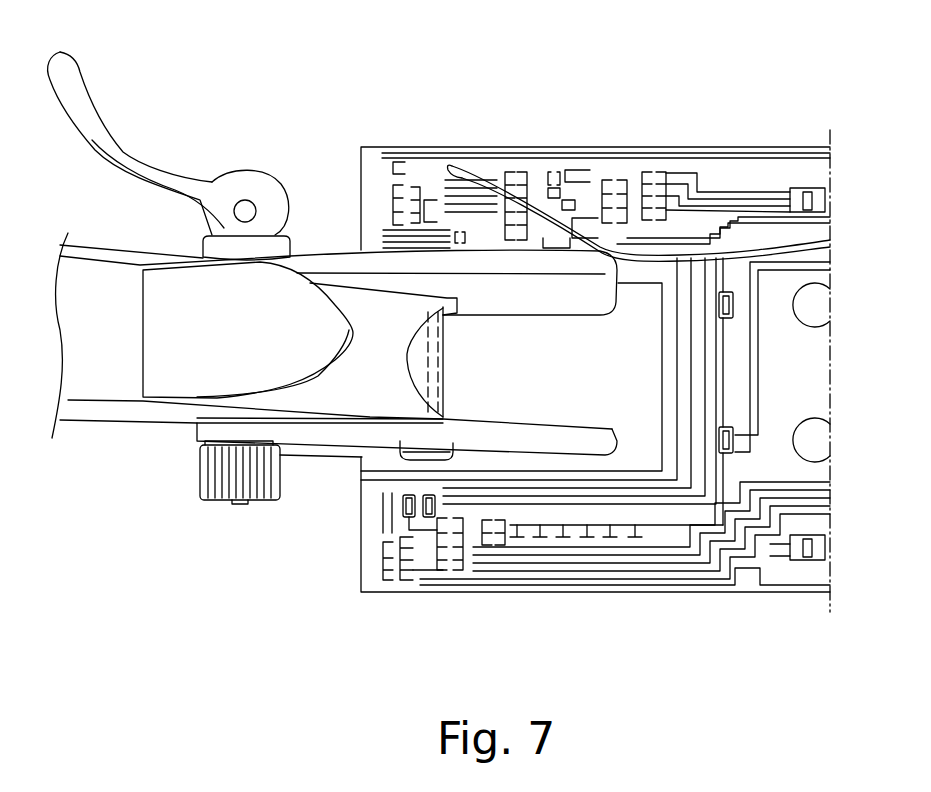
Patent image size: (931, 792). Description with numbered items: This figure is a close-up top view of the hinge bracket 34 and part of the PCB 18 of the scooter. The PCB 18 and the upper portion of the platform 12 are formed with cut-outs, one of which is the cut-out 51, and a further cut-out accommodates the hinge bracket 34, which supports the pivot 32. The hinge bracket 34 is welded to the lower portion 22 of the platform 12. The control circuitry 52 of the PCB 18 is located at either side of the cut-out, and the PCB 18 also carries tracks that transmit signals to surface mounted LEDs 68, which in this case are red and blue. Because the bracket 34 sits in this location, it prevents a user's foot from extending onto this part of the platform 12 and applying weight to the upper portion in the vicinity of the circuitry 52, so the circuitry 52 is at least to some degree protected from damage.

The platform 12 is at (450, 148).
The PCB 18 is at (647, 577).
The lower portion 22 is at (569, 390).
The pivot 32 is at (437, 364).
The hinge bracket 34 is at (318, 250).
The cut-out 51 is at (648, 373).
The circuitry 52 is at (458, 548).
The surface mounted LEDs 68 is at (733, 301).